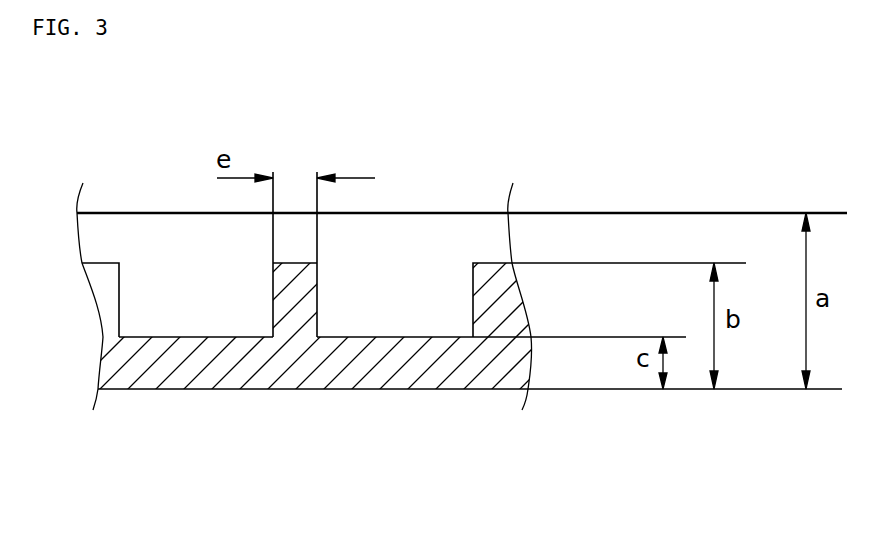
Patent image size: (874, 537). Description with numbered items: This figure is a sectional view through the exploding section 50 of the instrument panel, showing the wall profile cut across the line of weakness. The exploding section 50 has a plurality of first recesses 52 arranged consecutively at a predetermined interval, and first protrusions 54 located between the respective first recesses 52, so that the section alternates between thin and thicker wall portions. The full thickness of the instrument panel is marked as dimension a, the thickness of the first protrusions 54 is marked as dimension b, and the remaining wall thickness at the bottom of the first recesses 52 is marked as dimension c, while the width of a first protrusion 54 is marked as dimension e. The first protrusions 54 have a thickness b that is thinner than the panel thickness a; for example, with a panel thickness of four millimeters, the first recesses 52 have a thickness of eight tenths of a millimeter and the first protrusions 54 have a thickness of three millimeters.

The exploding section 50 is at (468, 197).
The first recesses 52 is at (372, 337).
The first protrusions 54 is at (295, 261).